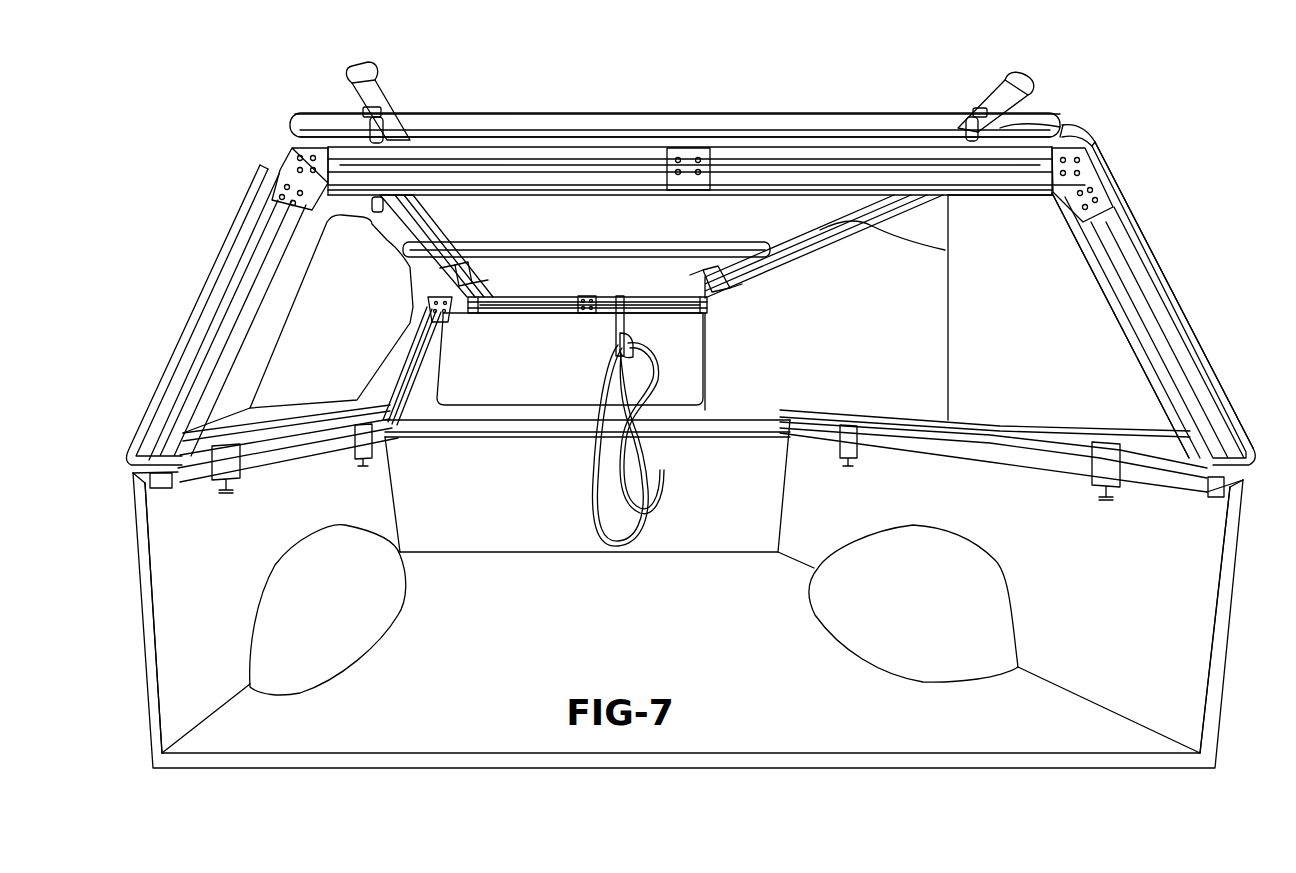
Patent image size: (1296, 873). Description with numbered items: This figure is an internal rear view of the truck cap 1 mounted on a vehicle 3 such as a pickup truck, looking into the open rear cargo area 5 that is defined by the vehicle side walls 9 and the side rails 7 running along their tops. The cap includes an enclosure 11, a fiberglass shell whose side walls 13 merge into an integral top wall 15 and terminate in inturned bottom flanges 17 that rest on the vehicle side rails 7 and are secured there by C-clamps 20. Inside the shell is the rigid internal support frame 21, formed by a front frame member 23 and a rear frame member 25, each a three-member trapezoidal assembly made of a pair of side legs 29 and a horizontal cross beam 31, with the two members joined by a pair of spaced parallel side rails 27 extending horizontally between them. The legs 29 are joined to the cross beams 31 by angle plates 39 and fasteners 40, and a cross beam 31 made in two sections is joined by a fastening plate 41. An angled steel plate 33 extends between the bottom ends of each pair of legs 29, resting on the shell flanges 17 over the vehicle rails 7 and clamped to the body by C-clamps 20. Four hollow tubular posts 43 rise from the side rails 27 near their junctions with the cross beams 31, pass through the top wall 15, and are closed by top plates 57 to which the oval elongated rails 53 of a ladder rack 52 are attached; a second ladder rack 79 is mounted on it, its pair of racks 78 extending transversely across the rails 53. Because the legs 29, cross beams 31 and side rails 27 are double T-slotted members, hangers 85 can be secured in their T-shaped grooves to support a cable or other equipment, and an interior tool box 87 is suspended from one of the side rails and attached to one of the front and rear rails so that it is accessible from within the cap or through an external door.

The truck cap 1 is at (236, 76).
The vehicle 3 is at (144, 670).
The rear cargo area 5 is at (470, 690).
The side rails 7 is at (140, 477).
The vehicle side walls 9 is at (142, 555).
The enclosure 11 is at (228, 214).
The side walls 13 is at (225, 267).
The top wall 15 is at (1062, 127).
The bottom flanges 17 is at (163, 488).
The C-clamps 20 is at (242, 478).
The internal support frame 21 is at (289, 144).
The front frame member 23 is at (632, 294).
The rear frame member 25 is at (607, 196).
The side rails 27 is at (432, 262).
The side legs 29 is at (216, 320).
The cross beam 31 is at (583, 190).
The angled steel plate 33 is at (335, 420).
The angle plates 39 is at (288, 158).
The fasteners 40 is at (283, 185).
The fastening plate 41 is at (700, 148).
The posts 43 is at (316, 122).
The ladder rack 52 is at (383, 88).
The elongated rails 53 is at (390, 102).
The top plates 57 is at (372, 112).
The racks 78 is at (580, 112).
The second ladder rack 79 is at (651, 110).
The hangers 85 is at (624, 318).
The interior tool box 87 is at (1030, 277).